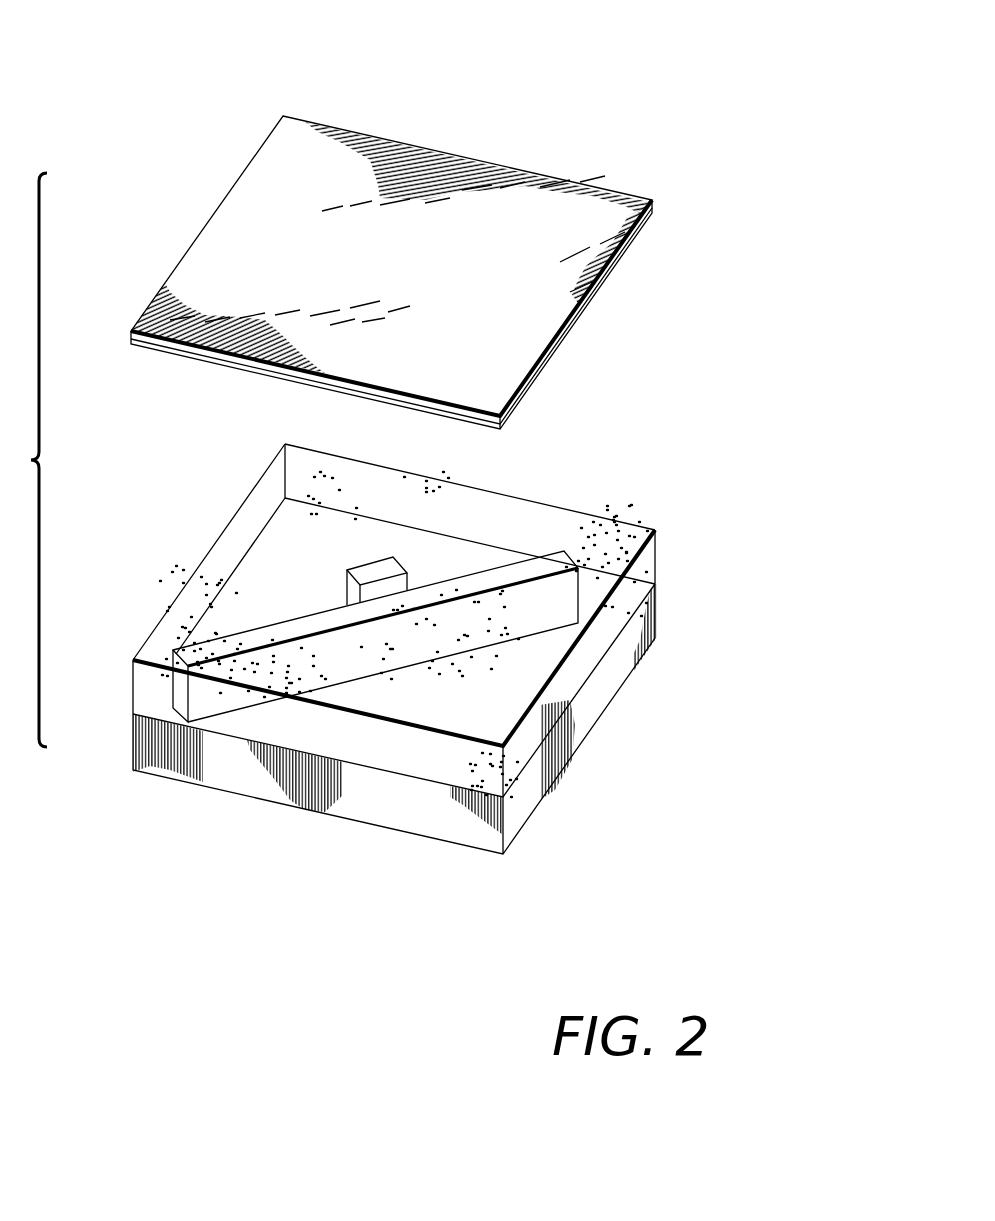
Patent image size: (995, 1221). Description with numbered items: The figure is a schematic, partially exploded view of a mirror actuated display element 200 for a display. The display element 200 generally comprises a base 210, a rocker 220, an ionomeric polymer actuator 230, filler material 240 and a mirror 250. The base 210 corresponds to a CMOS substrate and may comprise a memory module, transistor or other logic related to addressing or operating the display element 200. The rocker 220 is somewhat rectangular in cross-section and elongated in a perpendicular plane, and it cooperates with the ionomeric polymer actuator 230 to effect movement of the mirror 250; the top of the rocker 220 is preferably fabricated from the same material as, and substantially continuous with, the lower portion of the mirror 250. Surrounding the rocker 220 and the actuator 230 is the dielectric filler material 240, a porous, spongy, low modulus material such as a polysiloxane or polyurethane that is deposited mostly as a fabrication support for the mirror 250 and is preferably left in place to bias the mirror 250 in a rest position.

The display element 200 is at (695, 100).
The base 210 is at (430, 838).
The rocker 220 is at (559, 563).
The ionomeric polymer actuator 230 is at (347, 591).
The filler material 240 is at (516, 684).
The mirror 250 is at (255, 190).